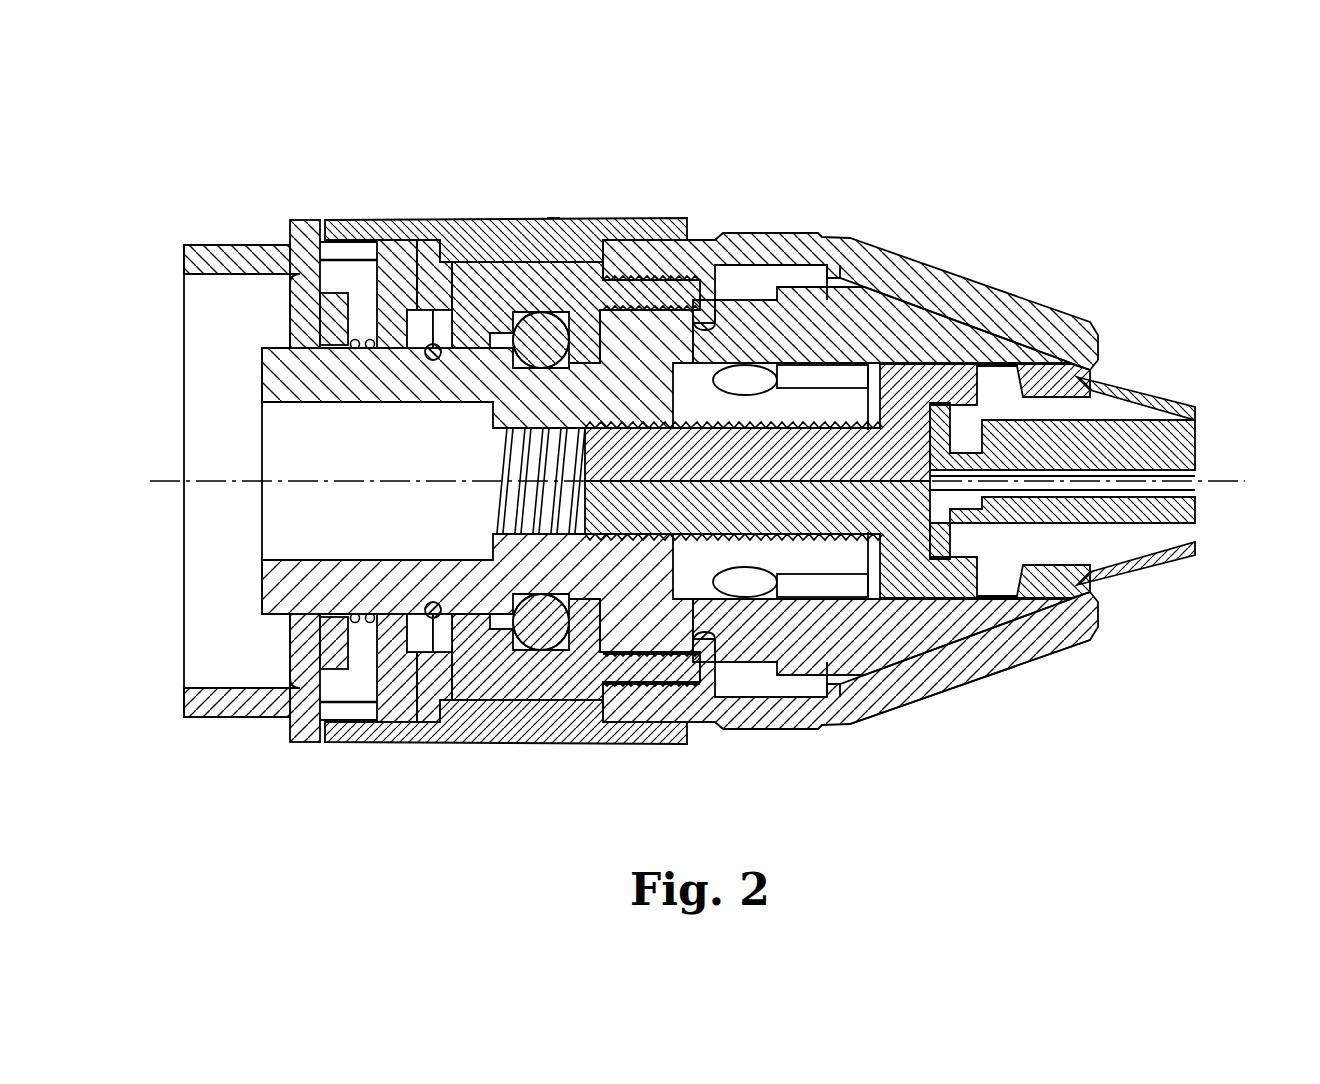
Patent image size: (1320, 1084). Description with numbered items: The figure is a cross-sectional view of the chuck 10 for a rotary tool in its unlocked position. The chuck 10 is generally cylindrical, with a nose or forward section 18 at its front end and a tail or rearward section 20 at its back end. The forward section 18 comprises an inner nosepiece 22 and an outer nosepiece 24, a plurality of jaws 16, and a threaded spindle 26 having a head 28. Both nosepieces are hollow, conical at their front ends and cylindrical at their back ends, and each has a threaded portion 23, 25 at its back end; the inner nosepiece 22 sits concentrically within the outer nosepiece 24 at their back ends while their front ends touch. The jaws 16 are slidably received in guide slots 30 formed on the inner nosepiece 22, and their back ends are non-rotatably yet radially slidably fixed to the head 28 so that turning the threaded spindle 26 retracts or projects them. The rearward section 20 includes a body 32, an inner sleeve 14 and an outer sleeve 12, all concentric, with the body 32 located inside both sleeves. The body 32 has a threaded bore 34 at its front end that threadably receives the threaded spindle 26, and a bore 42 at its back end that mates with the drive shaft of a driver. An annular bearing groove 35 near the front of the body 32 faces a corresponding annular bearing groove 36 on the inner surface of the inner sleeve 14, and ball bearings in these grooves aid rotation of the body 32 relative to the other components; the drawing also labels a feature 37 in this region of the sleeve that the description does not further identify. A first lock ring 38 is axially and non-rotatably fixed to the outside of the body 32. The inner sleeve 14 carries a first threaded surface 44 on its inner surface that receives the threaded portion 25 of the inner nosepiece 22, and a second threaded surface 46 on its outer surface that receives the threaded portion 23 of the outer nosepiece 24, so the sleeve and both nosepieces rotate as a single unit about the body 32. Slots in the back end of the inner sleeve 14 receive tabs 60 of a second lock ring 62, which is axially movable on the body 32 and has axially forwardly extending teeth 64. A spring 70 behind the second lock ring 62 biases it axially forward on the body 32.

The chuck 10 is at (682, 142).
The outer sleeve 12 is at (590, 690).
The inner sleeve 14 is at (550, 682).
The jaws 16 is at (1200, 418).
The forward section 18 is at (884, 724).
The rearward section 20 is at (485, 180).
The inner nosepiece 22 is at (1060, 592).
The threaded portion of outer nosepiece 23 is at (668, 272).
The outer nosepiece 24 is at (1070, 325).
The threaded portion of inner nosepiece 25 is at (710, 318).
The threaded spindle 26 is at (815, 512).
The head 28 is at (942, 585).
The guide slots 30 is at (847, 378).
The body 32 is at (318, 600).
The threaded bore 34 is at (495, 432).
The annular bearing groove 35 is at (577, 290).
The annular bearing groove 36 is at (535, 330).
The outer sleeve surface 37 is at (547, 218).
The first lock ring 38 is at (437, 330).
The bore 42 is at (300, 405).
The first threaded surface 44 is at (690, 680).
The second threaded surface 46 is at (620, 665).
The tabs 60 is at (433, 700).
The second lock ring 62 is at (395, 640).
The teeth 64 is at (418, 320).
The spring 70 is at (360, 625).